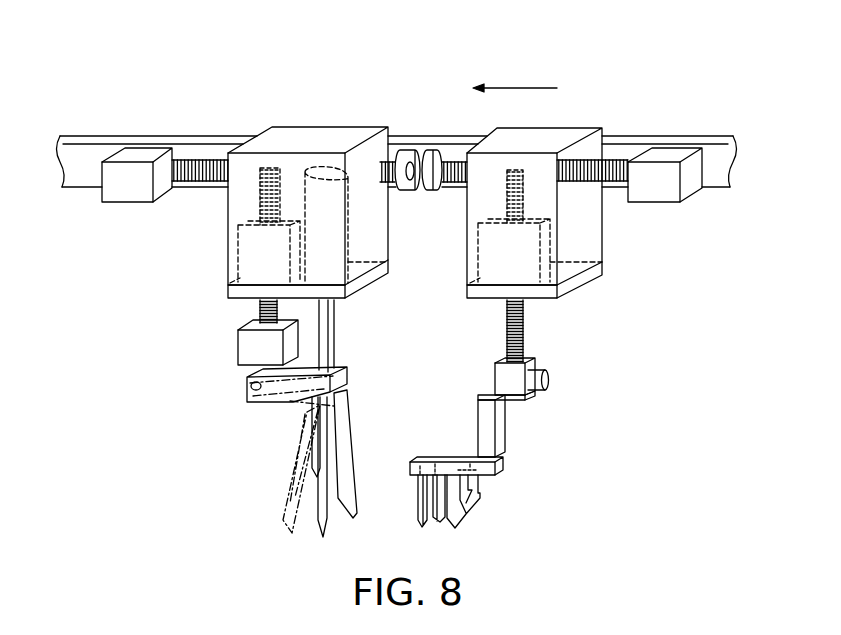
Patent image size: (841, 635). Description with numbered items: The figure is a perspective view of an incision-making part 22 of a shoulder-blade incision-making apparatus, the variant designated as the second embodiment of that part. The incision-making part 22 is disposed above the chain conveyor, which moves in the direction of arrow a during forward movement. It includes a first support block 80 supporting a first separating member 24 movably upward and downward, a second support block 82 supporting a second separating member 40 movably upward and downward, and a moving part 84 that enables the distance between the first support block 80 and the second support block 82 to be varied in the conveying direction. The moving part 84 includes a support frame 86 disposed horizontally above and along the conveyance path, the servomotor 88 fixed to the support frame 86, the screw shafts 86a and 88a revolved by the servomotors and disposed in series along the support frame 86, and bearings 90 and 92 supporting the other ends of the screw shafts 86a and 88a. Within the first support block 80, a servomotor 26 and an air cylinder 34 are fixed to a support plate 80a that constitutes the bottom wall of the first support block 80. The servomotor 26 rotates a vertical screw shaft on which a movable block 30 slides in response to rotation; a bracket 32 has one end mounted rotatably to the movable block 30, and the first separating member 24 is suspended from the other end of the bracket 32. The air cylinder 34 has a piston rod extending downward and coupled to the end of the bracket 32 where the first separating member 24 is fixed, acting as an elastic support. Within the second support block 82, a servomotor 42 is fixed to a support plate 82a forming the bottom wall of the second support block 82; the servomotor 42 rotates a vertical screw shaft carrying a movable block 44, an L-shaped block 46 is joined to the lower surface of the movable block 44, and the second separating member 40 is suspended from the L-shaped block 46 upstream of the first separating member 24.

The incision-making part 22 is at (401, 32).
The first separating member 24 is at (279, 477).
The servomotor 26 is at (252, 257).
The movable block 30 is at (258, 350).
The bracket 32 is at (342, 377).
The air cylinder 34 is at (327, 233).
The second separating member 40 is at (507, 494).
The servomotor 42 is at (523, 247).
The movable block 44 is at (507, 377).
The L-shaped block 46 is at (495, 428).
The first support block 80 is at (302, 215).
The support plate 80a is at (357, 293).
The second support block 82 is at (558, 216).
The support plate 82a is at (570, 292).
The moving part 84 is at (423, 160).
The support frame 86 is at (143, 155).
The screw shaft 86a is at (189, 160).
The servomotor 88 is at (667, 157).
The screw shaft 88a is at (460, 158).
The bearing 90 is at (408, 190).
The bearing 92 is at (433, 190).
The arrow a is at (519, 86).